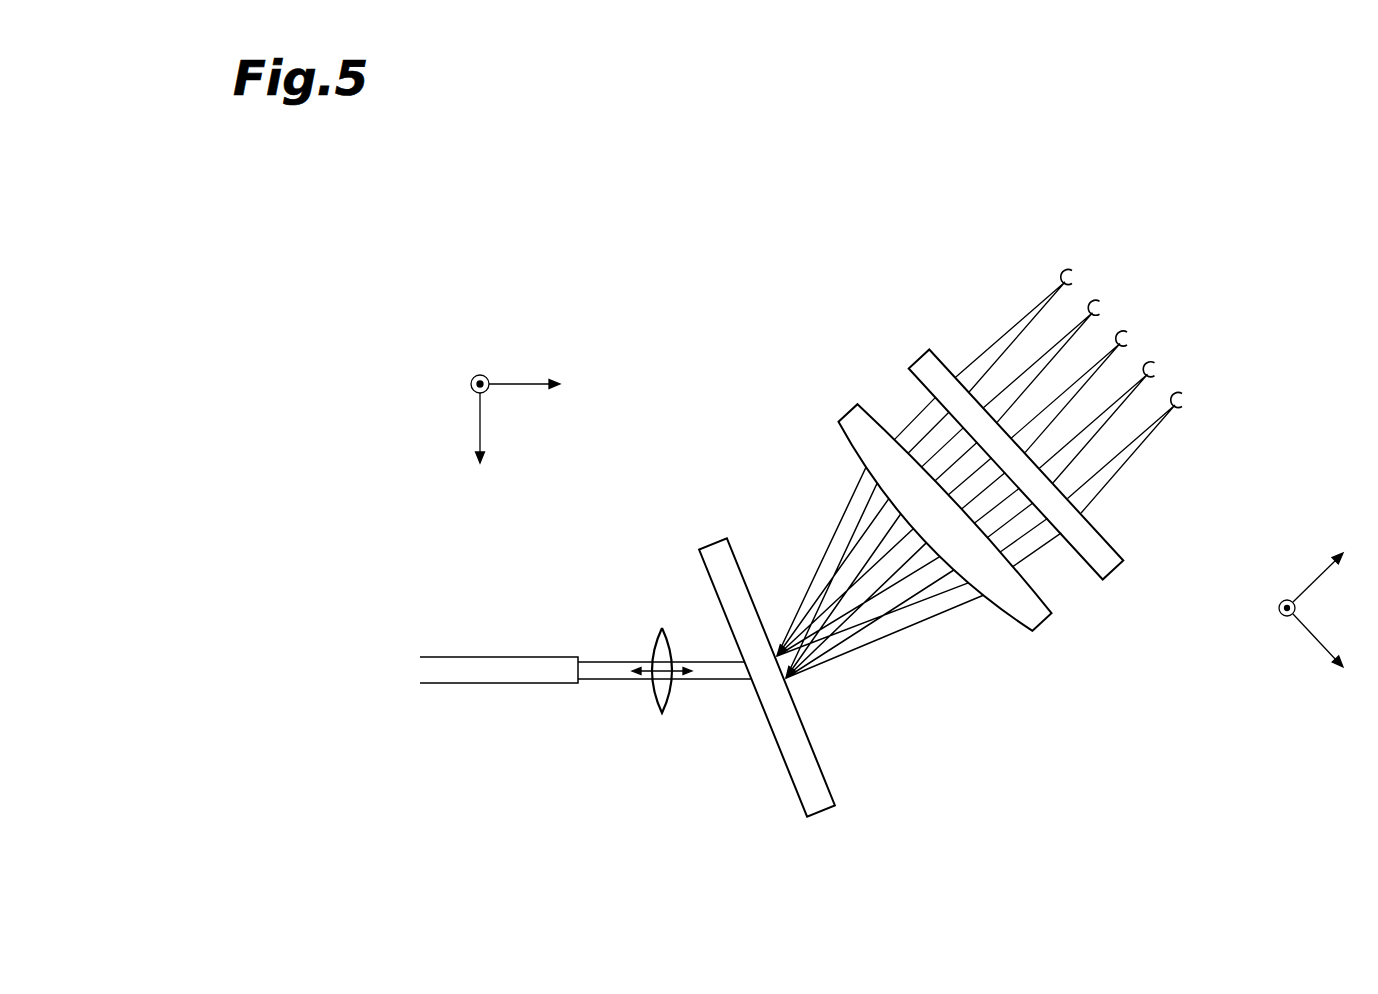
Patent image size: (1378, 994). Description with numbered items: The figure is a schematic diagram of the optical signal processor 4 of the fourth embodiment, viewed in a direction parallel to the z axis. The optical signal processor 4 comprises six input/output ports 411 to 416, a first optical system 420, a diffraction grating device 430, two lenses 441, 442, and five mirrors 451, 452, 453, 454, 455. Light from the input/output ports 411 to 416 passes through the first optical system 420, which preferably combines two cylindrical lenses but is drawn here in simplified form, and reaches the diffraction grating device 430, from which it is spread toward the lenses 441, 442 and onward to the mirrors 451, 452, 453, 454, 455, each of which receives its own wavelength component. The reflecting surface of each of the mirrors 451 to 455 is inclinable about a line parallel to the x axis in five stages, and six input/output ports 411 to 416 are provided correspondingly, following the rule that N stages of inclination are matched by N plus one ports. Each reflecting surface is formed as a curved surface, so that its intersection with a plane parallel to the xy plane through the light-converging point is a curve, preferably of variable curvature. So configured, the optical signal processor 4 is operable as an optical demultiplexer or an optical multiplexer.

The optical signal processor 4 is at (684, 264).
The input/output port 411 is at (585, 711).
The input/output port 416 is at (485, 684).
The first optical system 420 is at (655, 706).
The diffraction grating device 430 is at (822, 803).
The lens 441 is at (1040, 622).
The lens 442 is at (1107, 571).
The mirror 451 is at (1074, 284).
The mirror 452 is at (1101, 315).
The mirror 453 is at (1129, 345).
The mirror 454 is at (1156, 376).
The mirror 455 is at (1184, 407).